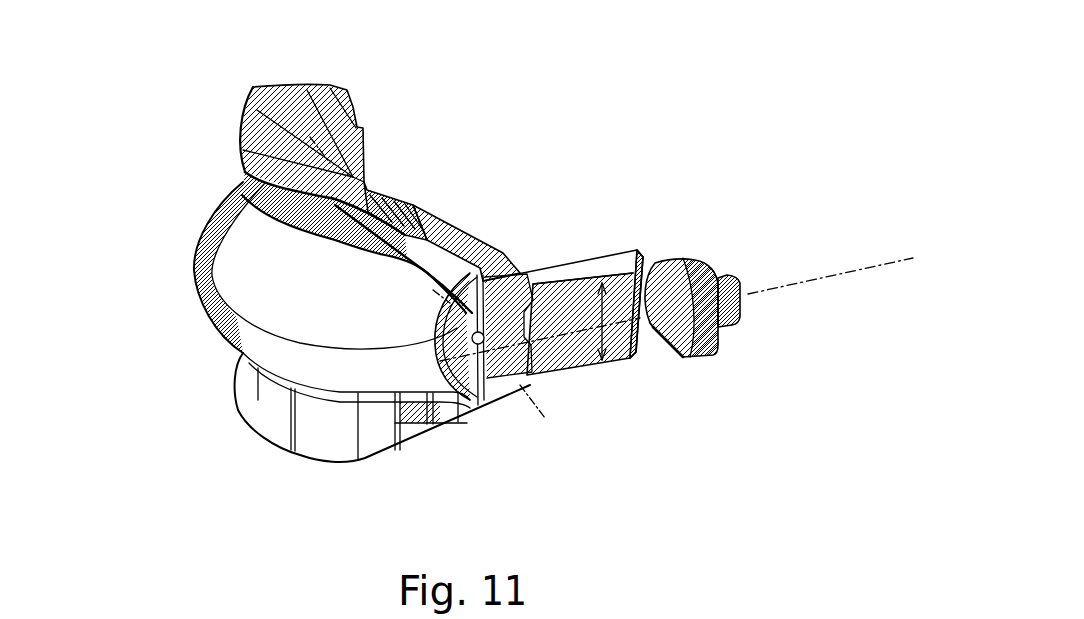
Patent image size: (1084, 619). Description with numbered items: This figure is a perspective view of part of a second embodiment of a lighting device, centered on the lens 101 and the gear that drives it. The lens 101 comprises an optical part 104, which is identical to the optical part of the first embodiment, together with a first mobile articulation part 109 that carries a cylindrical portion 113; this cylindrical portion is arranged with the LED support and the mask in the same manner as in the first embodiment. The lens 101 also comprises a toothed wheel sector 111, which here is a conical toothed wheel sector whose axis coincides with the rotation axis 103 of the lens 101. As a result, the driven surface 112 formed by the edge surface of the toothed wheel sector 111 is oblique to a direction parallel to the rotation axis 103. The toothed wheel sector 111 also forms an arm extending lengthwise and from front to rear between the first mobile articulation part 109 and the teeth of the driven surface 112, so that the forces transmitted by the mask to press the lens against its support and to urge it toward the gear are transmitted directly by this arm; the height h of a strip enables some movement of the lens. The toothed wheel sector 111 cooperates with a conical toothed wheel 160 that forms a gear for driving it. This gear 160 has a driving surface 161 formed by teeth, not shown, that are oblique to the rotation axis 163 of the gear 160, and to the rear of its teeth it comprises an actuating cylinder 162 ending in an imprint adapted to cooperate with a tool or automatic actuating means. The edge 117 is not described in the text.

The lens 101 is at (173, 97).
The rotation axis 103 is at (258, 74).
The optical part 104 is at (200, 240).
The first mobile articulation part 109 is at (458, 224).
The toothed wheel sector 111 is at (583, 262).
The driven surface 112 is at (648, 264).
The cylindrical portion 113 is at (480, 411).
The edge 117 is at (610, 266).
The conical toothed wheel 160 is at (729, 361).
The driving surface 161 is at (665, 355).
The actuating cylinder 162 is at (745, 280).
The rotation axis 163 is at (891, 262).
The height h is at (590, 322).